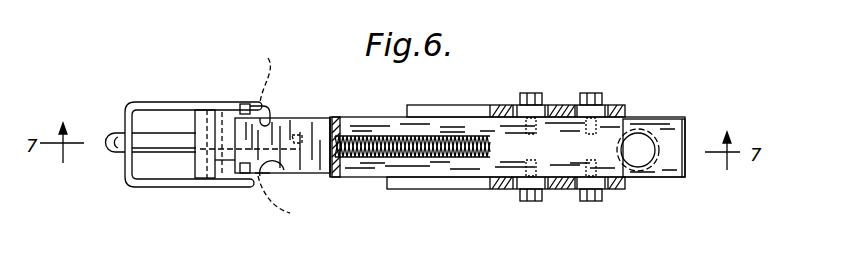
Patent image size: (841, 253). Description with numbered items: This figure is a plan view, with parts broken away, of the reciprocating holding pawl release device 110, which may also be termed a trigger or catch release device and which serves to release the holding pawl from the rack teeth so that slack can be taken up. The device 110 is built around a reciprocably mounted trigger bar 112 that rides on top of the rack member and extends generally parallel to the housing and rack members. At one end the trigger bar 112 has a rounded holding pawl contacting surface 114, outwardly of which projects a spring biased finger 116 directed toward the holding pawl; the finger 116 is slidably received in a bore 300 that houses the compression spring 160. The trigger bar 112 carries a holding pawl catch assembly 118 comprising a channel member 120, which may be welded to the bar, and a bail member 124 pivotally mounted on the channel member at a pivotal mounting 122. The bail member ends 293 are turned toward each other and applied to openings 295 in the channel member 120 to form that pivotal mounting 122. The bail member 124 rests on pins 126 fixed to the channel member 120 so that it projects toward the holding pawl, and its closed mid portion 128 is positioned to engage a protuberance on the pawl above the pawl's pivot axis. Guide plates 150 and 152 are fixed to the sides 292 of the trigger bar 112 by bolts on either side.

The holding pawl release device 110 is at (570, 93).
The trigger bar 112 is at (667, 121).
The holding pawl contacting surface 114 is at (193, 164).
The finger 116 is at (157, 138).
The holding pawl catch assembly 118 is at (290, 110).
The channel member 120 is at (332, 178).
The pivotal mounting 122 is at (263, 177).
The bail member 124 is at (150, 187).
The pins 126 is at (246, 104).
The closed mid portion 128 is at (128, 160).
The guide plate 150 is at (430, 107).
The guide plate 152 is at (450, 190).
The compression spring 160 is at (372, 158).
The sides of the trigger bar 292 is at (202, 114).
The bail member ends 293 is at (268, 121).
The openings 295 is at (285, 133).
The bore 300 is at (336, 119).